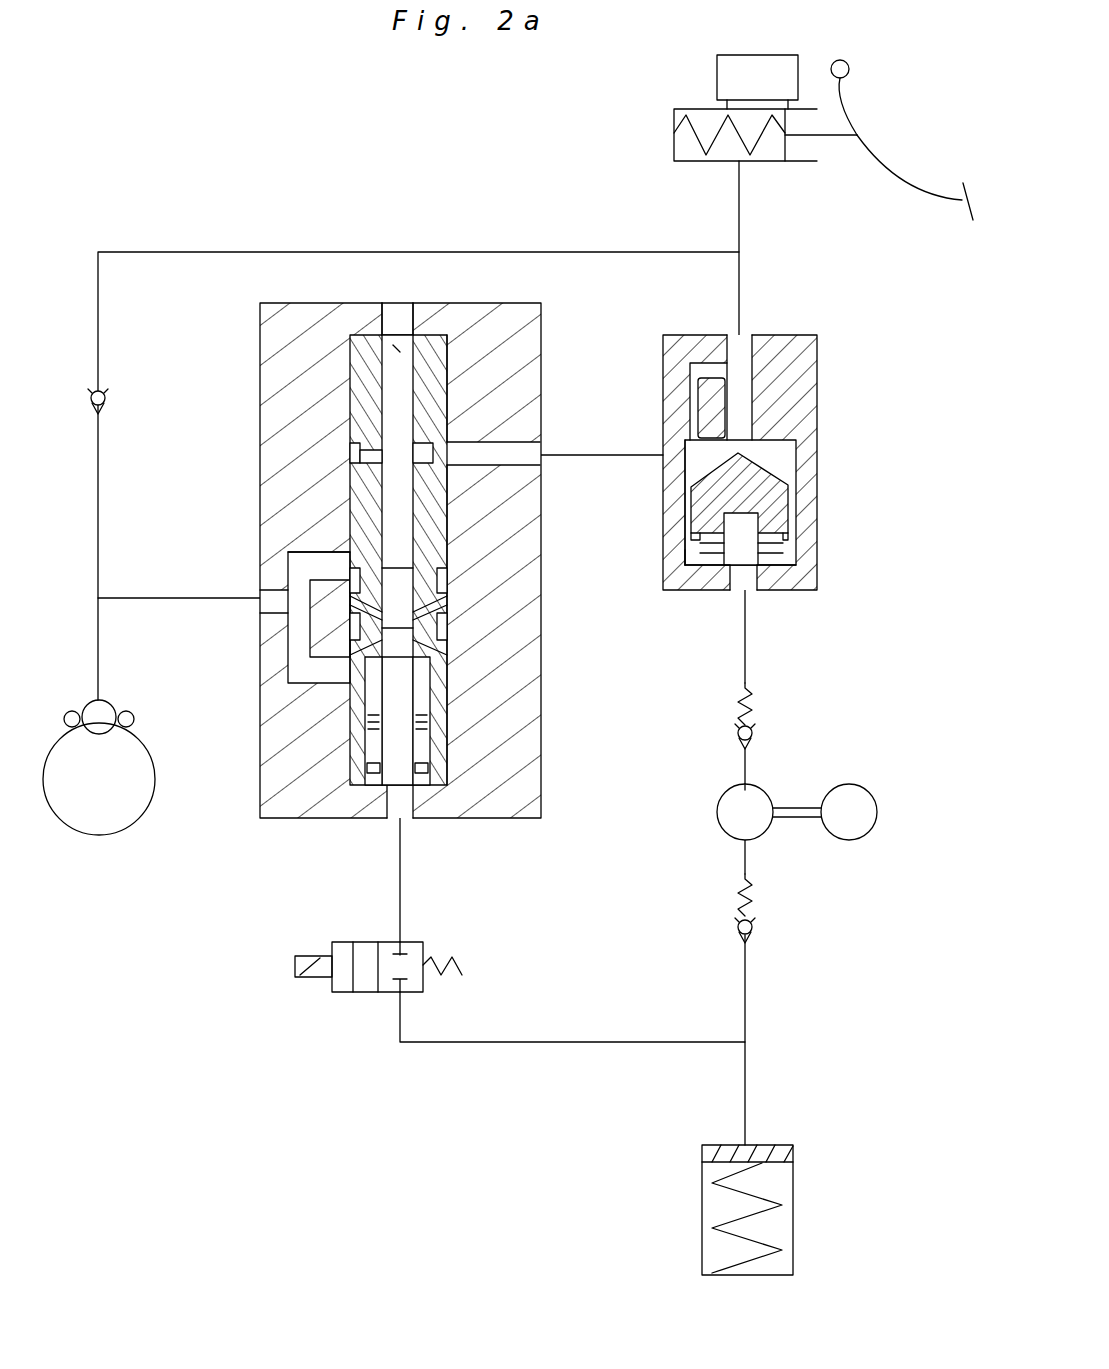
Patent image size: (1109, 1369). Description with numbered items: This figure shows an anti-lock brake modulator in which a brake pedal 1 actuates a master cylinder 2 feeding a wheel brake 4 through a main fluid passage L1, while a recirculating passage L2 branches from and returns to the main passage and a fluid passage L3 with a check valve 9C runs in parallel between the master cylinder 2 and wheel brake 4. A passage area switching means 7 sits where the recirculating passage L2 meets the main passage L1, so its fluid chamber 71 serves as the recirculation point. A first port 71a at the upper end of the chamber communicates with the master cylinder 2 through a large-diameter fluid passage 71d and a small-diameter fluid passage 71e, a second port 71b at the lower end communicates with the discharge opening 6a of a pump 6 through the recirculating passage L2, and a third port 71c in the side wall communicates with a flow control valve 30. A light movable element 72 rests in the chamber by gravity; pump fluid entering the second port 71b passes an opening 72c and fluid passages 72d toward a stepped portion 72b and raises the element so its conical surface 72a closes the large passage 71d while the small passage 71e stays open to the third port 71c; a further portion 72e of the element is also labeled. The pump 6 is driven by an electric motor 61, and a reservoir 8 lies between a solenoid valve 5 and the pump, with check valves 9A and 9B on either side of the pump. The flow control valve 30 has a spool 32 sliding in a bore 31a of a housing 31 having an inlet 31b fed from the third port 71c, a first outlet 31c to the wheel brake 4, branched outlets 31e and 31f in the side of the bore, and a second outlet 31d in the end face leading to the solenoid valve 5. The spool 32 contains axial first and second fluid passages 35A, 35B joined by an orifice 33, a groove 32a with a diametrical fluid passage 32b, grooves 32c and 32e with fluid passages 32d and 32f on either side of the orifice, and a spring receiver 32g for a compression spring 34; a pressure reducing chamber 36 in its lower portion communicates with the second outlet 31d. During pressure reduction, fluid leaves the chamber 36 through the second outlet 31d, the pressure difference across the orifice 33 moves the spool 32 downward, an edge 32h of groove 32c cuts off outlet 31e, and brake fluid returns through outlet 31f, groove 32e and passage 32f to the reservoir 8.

The brake pedal 1 is at (893, 165).
The master cylinder 2 is at (780, 162).
The wheel brake 4 is at (95, 700).
The solenoid valve 5 is at (422, 940).
The pump 6 is at (762, 788).
The discharge opening 6a is at (743, 786).
The passage area switching means 7 is at (803, 333).
The reservoir 8 is at (782, 1144).
The check valve 9A is at (755, 928).
The check valve 9B is at (755, 733).
The check valve 9C is at (92, 394).
The flow control valve 30 is at (514, 300).
The housing 31 is at (293, 305).
The bore 31a is at (474, 330).
The inlet 31b is at (527, 459).
The first outlet 31c is at (275, 600).
The second outlet 31d is at (410, 822).
The outlet 31e is at (350, 578).
The outlet 31f is at (322, 680).
The spool 32 is at (363, 333).
The groove 32a is at (519, 560).
The fluid passage 32b is at (407, 447).
The fluid passage 32d is at (372, 466).
The outer peripheral groove 32c is at (355, 595).
The outer peripheral groove portion 32e is at (365, 626).
The fluid passage 32f is at (380, 628).
The spring receiver 32g is at (370, 650).
The edge 32h is at (378, 590).
The orifice 33 is at (405, 565).
The compression spring 34 is at (415, 775).
The first fluid passage 35A is at (397, 345).
The second fluid passage 35B is at (410, 657).
The pressure reducing chamber 36 is at (400, 748).
The electric motor 61 is at (877, 812).
The fluid chamber 71 is at (783, 458).
The first port 71a is at (742, 342).
The second port 71b is at (738, 592).
The third port 71c is at (666, 478).
The fluid passage 71d is at (742, 412).
The fluid passage 71e is at (690, 393).
The movable element 72 is at (783, 506).
The conical surface 72a is at (790, 485).
The stepped portion 72b is at (672, 588).
The opening 72c is at (762, 522).
The fluid passages 72d is at (783, 591).
The valve seat 72e is at (665, 560).
The main fluid passage L1 is at (141, 598).
The recirculating passage L2 is at (745, 993).
The fluid passage L3 is at (222, 252).